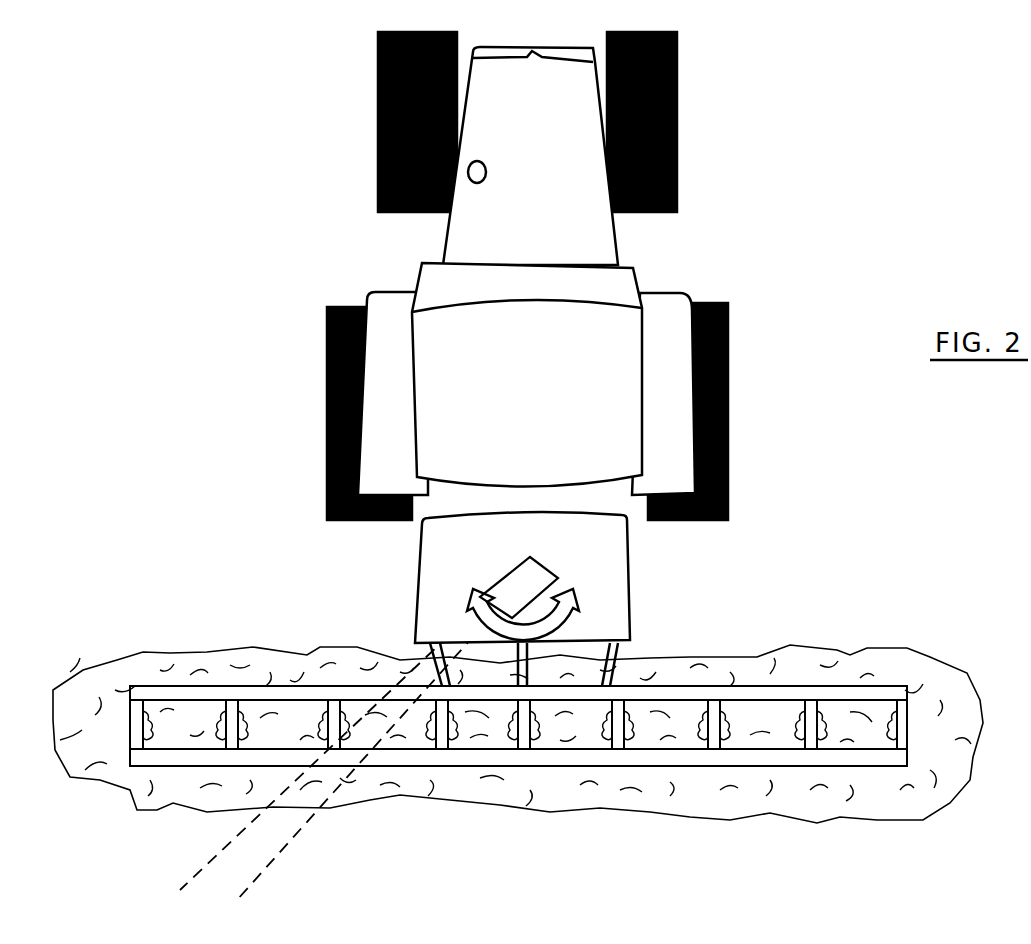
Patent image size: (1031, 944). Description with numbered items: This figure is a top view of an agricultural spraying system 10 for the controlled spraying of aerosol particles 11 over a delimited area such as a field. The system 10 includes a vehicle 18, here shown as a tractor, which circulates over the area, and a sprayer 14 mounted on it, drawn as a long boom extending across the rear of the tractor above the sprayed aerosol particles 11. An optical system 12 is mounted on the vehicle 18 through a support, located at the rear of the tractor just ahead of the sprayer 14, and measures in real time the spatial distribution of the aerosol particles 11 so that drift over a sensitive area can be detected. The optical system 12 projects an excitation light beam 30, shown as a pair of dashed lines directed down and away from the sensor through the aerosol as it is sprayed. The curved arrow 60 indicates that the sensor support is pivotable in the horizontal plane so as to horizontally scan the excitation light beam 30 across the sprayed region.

The agricultural spraying system 10 is at (494, 359).
The aerosol particles 11 is at (937, 668).
The optical system 12 is at (558, 572).
The sprayer 14 is at (147, 690).
The vehicle 18 is at (622, 232).
The excitation light beam 30 is at (272, 842).
The arrow 60 is at (574, 598).